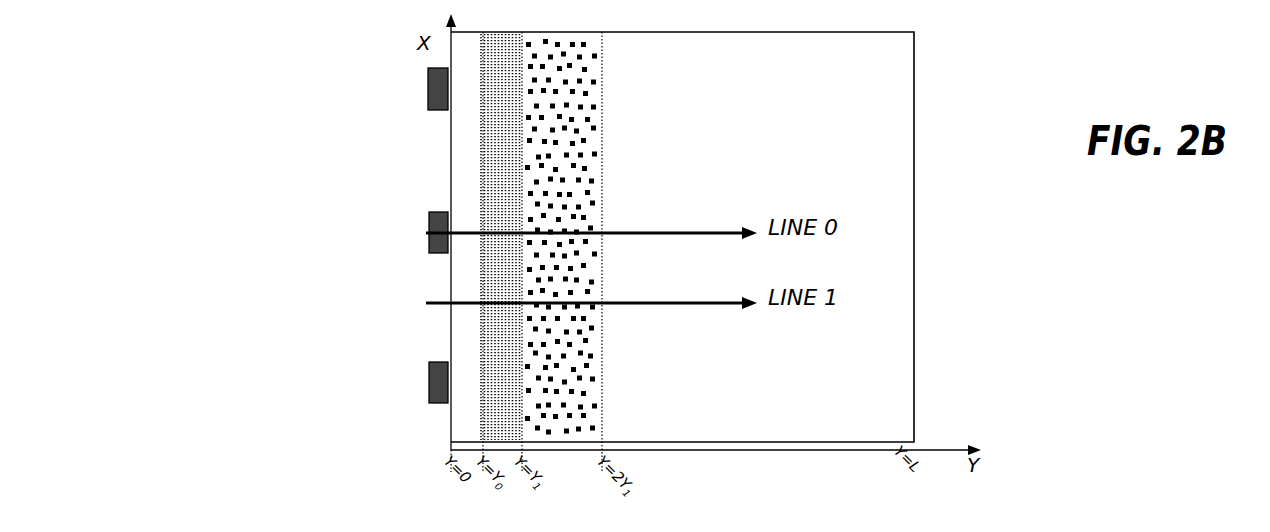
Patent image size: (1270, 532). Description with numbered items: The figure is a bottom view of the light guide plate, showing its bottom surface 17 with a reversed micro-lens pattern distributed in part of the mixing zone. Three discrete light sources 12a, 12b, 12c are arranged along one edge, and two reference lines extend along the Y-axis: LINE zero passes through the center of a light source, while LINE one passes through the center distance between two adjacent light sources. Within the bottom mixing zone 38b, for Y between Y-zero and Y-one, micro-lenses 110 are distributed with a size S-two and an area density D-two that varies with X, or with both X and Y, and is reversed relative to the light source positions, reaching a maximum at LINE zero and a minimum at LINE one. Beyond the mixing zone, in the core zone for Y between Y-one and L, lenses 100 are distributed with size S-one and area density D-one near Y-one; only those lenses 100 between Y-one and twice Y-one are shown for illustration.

The discrete light source 12a is at (432, 233).
The discrete light source 12b is at (432, 92).
The discrete light source 12c is at (432, 386).
The bottom surface 17 is at (898, 51).
The mixing zone 38b is at (535, 227).
The lenses 100 is at (598, 135).
The micro-lenses 110 is at (500, 158).